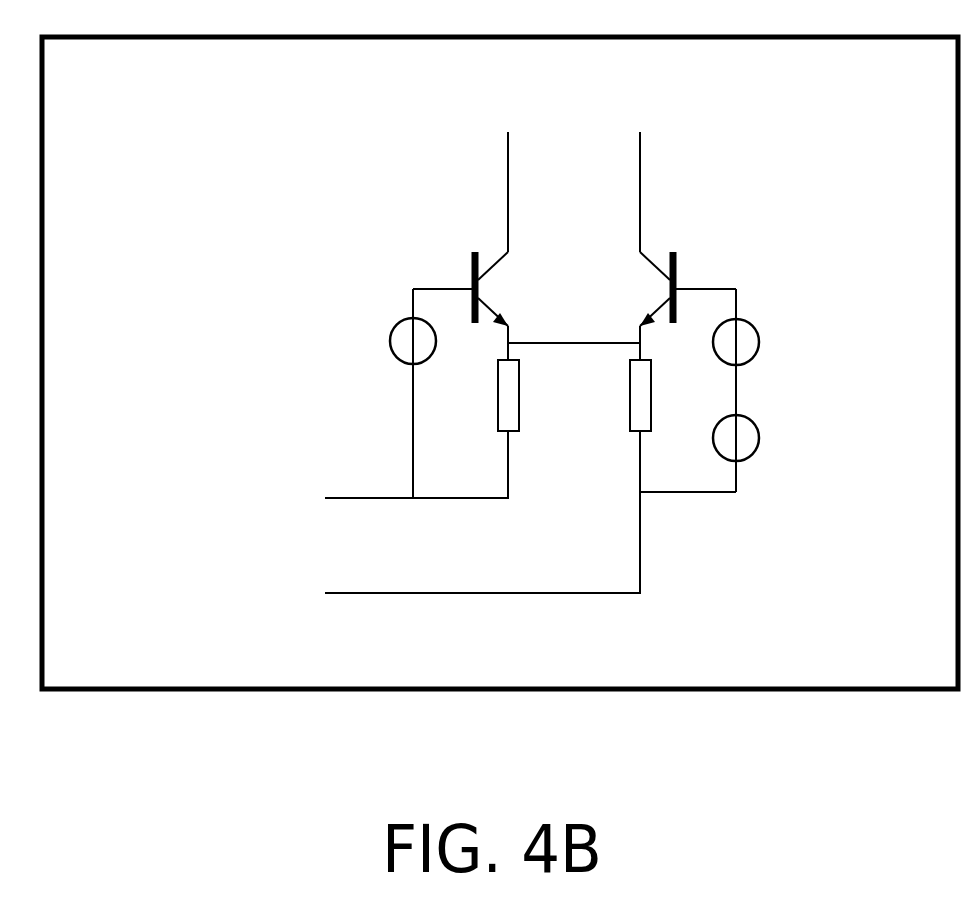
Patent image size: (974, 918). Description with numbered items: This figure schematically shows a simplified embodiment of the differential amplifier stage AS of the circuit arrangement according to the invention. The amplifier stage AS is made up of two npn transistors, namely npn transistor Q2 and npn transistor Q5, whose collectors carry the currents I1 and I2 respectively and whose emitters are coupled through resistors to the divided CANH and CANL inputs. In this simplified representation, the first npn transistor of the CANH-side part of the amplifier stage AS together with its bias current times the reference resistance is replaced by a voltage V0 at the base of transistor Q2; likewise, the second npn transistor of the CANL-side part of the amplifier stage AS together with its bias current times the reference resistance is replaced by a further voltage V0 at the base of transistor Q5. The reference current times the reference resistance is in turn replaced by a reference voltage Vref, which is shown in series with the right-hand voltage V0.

The amplifier stage AS is at (828, 691).
The npn transistor Q2 is at (460, 287).
The npn transistor Q5 is at (688, 287).
The current source / collector current I1 is at (506, 163).
The current source / collector current I2 is at (638, 163).
The voltage V0 is at (575, 393).
The reference voltage Vref is at (773, 438).